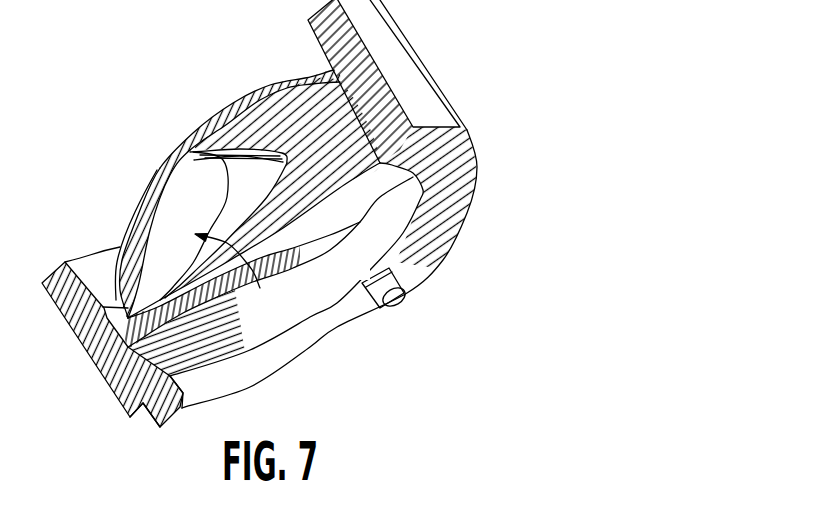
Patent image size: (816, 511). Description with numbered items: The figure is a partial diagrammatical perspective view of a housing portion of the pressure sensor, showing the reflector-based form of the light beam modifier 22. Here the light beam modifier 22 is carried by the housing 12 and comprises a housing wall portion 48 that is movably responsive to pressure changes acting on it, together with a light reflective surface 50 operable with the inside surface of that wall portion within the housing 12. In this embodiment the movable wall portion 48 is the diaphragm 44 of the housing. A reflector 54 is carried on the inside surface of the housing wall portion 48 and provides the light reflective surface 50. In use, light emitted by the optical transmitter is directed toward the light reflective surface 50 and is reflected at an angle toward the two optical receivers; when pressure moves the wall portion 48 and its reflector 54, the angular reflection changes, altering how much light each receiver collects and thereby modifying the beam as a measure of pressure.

The housing 12 is at (377, 35).
The light beam modifier 22 is at (132, 294).
The diaphragm 44 is at (150, 194).
The housing wall portion 48 is at (198, 150).
The light reflective surface 50 is at (212, 313).
The reflector 54 is at (277, 288).